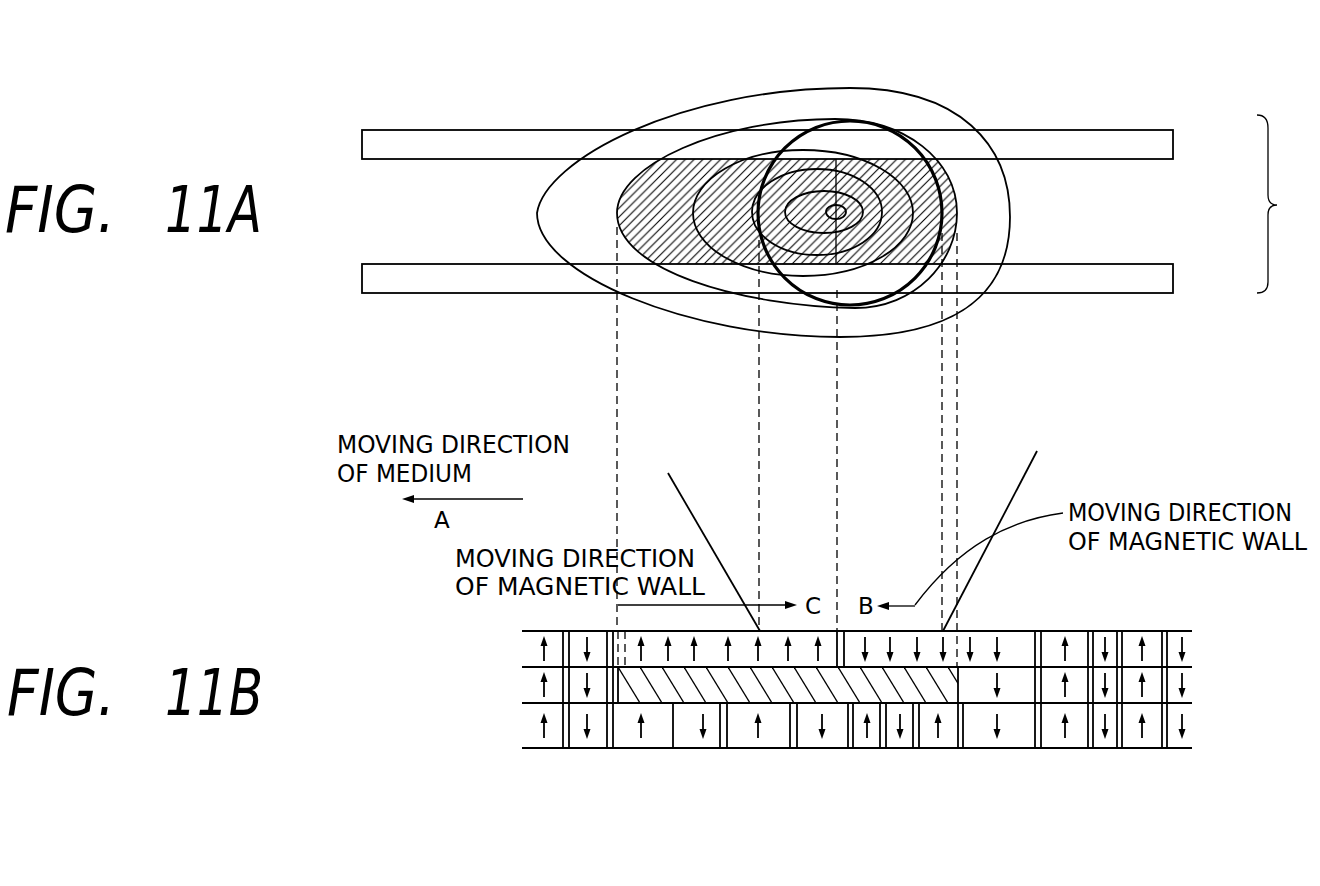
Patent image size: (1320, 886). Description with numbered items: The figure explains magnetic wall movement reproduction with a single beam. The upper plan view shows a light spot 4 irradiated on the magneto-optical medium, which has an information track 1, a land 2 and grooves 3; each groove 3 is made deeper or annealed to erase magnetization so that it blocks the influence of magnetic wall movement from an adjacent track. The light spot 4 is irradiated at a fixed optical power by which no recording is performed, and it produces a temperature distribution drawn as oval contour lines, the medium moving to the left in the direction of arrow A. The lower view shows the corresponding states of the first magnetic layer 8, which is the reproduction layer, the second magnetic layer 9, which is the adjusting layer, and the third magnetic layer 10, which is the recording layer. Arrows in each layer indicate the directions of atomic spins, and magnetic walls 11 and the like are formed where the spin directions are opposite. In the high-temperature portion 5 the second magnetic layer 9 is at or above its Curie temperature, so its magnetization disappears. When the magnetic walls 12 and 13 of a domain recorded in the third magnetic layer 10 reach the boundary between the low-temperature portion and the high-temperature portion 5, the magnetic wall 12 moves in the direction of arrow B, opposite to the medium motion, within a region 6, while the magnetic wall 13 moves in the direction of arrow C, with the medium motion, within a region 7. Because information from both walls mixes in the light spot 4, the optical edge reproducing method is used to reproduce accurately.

In FIG. 11A, the information track 1 is at (1277, 204).
In FIG. 11A, the land 2 is at (1165, 216).
In FIG. 11A, the grooves 3 is at (1165, 146).
In FIG. 11A, the light spot 4 is at (873, 118).
In FIG. 11B, the light spot 4 is at (1042, 455).
In FIG. 11A, the high-temperature portion 5 is at (773, 128).
In FIG. 11B, the high-temperature portion 5 is at (813, 690).
In FIG. 11A, the region 6 is at (932, 203).
In FIG. 11B, the region 6 is at (851, 631).
In FIG. 11A, the region 7 is at (653, 173).
In FIG. 11B, the region 7 is at (828, 631).
In FIG. 11B, the first magnetic layer 8 is at (1195, 651).
In FIG. 11B, the second magnetic layer 9 is at (1195, 685).
In FIG. 11B, the third magnetic layer 10 is at (1195, 721).
In FIG. 11B, the magnetic walls 11 is at (1040, 628).
In FIG. 11B, the magnetic wall 12 is at (963, 631).
In FIG. 11B, the magnetic wall 13 is at (620, 631).